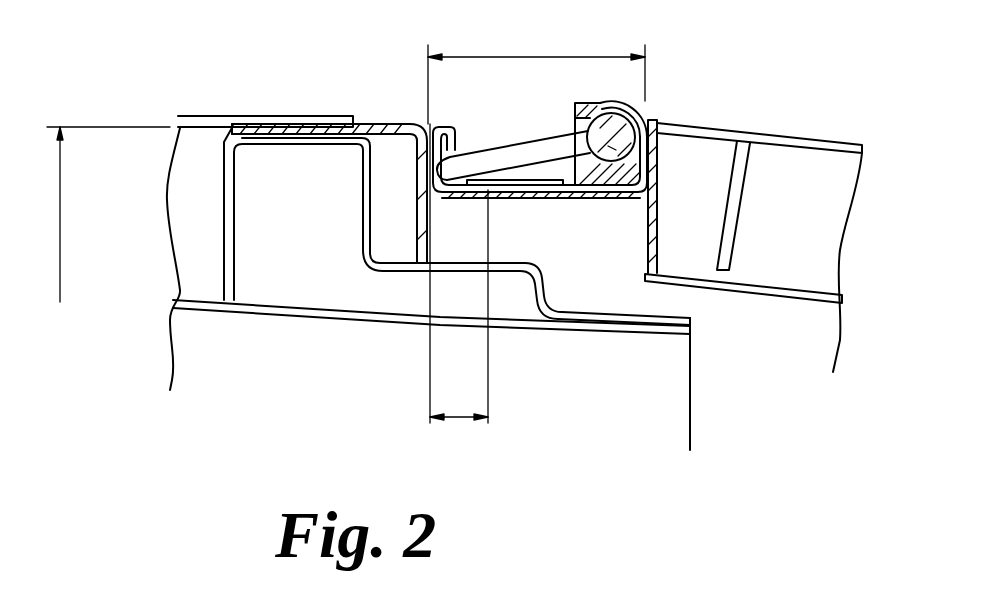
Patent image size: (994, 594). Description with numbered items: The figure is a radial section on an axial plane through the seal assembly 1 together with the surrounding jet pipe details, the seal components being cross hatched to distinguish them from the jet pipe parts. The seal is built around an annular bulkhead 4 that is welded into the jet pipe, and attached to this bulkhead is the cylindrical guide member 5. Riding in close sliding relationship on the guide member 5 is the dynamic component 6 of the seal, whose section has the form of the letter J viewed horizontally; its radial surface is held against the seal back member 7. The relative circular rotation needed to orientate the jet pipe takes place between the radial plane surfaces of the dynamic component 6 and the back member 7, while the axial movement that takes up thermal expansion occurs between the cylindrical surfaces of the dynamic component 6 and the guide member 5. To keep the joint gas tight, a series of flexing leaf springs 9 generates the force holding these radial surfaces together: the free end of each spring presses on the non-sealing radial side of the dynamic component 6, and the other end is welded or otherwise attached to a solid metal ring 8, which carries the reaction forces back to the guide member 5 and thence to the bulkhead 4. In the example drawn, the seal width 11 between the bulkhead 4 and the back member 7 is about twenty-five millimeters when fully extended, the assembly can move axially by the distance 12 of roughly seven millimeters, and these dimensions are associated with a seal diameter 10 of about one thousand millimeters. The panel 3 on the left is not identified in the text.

The seal assembly 1 is at (404, 112).
The first panel (body) 3 is at (195, 175).
The annular bulkhead 4 is at (656, 199).
The cylindrical guide member 5 is at (588, 197).
The dynamic component 6 is at (473, 195).
The seal back member 7 is at (412, 193).
The solid metal ring 8 is at (607, 135).
The leaf springs 9 is at (527, 153).
The seal diameter 10 is at (60, 247).
The seal width 11 is at (543, 53).
The axial movement distance 12 is at (463, 418).